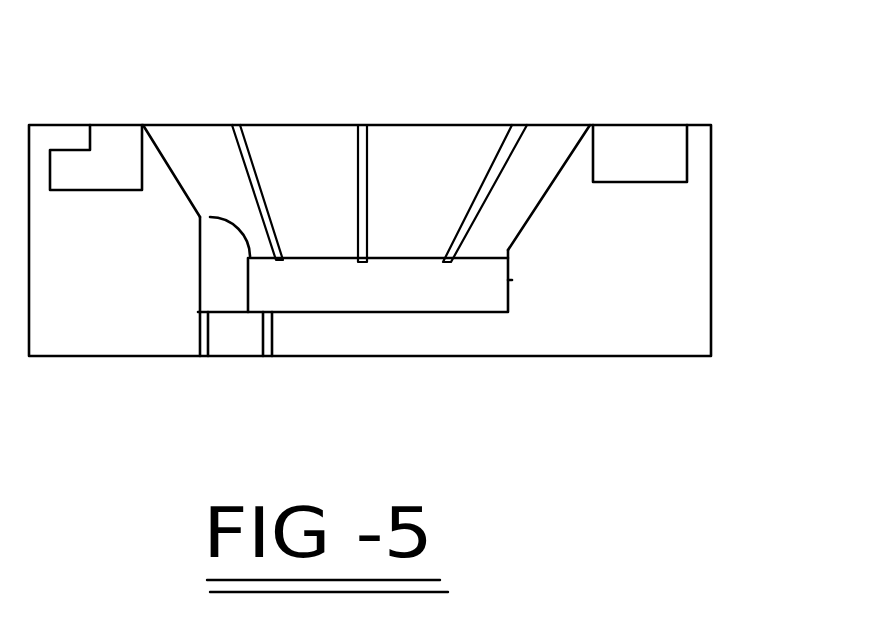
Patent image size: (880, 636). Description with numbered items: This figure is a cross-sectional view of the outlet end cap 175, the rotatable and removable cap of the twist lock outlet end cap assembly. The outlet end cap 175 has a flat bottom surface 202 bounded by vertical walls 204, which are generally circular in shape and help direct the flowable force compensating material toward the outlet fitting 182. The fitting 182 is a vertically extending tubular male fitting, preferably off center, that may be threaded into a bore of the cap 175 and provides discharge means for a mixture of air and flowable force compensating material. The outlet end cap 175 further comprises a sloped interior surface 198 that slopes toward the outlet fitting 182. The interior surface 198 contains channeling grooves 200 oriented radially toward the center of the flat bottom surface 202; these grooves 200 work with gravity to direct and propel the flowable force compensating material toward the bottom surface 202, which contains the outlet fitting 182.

The outlet end cap 175 is at (667, 255).
The tubular male fitting 182 is at (232, 338).
The sloped interior surface 198 is at (180, 182).
The channeling groove 200 is at (467, 140).
The flat bottom surface 202 is at (375, 312).
The vertical walls 204 is at (510, 280).